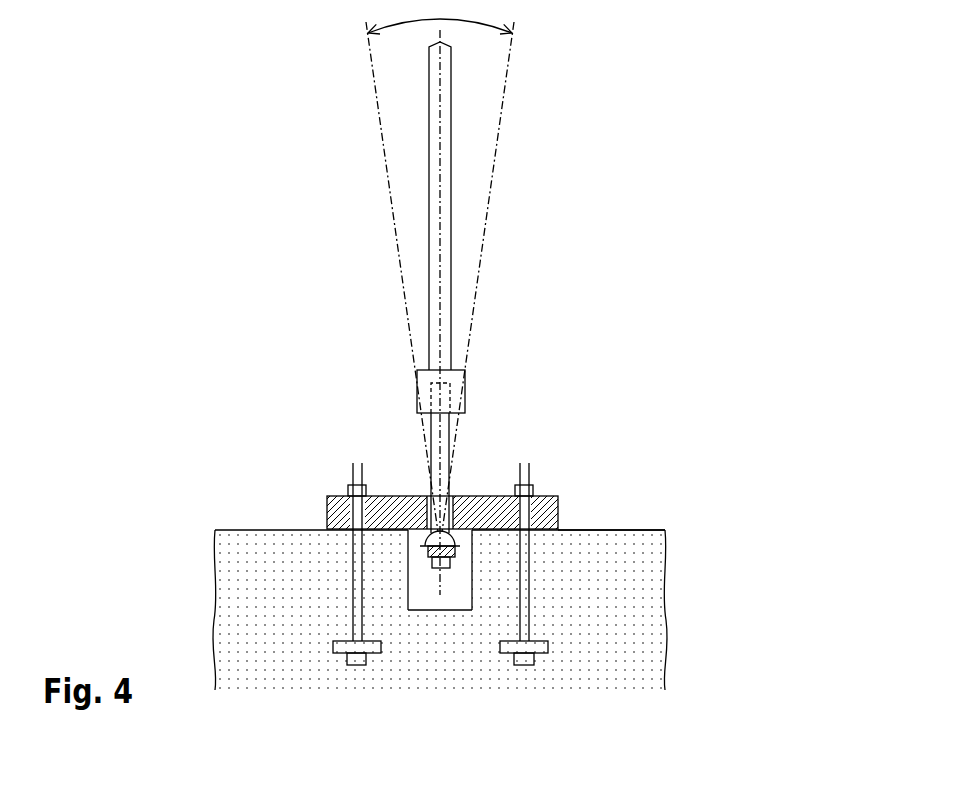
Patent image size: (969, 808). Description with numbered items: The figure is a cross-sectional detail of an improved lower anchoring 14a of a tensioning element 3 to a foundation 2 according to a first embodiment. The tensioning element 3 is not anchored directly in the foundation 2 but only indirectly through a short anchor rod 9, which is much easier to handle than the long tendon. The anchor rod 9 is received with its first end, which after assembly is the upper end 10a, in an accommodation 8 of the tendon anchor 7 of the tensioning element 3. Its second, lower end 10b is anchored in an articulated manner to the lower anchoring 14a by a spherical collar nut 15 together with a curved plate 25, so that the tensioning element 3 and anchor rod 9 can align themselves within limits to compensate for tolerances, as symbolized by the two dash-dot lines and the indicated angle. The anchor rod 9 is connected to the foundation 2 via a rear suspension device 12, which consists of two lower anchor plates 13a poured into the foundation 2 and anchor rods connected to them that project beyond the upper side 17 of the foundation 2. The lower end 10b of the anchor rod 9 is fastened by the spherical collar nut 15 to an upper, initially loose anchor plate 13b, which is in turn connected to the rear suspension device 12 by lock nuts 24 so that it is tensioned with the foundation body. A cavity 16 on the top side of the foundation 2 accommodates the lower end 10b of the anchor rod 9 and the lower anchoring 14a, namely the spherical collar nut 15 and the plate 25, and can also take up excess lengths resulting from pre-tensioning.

The foundation 2 is at (491, 594).
The tensioning element 3 is at (512, 206).
The tendon anchor 7 is at (502, 359).
The accommodation 8 is at (450, 403).
The anchor rod 9 is at (398, 448).
The first end 10a is at (367, 312).
The second end 10b is at (253, 555).
The rear suspension device 12 is at (355, 538).
The lower anchor plates 13a is at (236, 643).
The upper anchor plate 13b is at (503, 463).
The lower anchoring 14a is at (430, 598).
The spherical collar nut 15 is at (508, 474).
The cavity 16 is at (587, 627).
The upper side 17 is at (610, 527).
The lock nuts 24 is at (315, 444).
The curved plate 25 is at (398, 471).